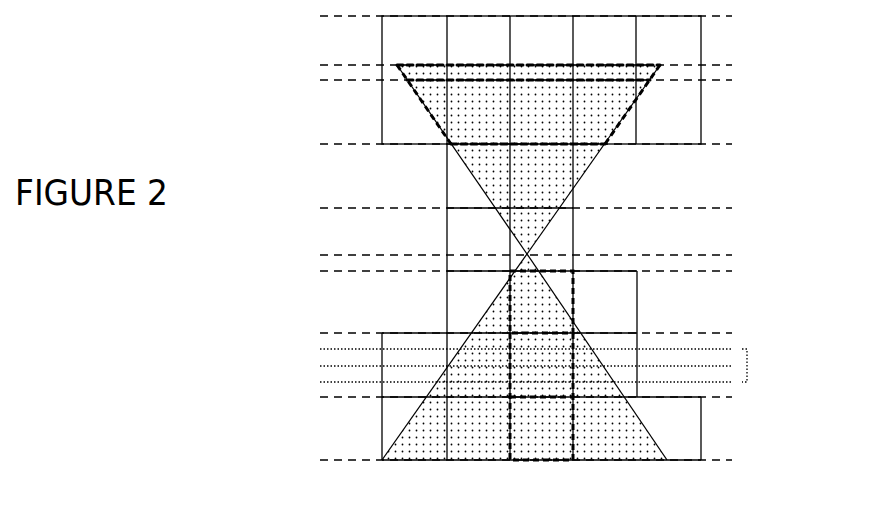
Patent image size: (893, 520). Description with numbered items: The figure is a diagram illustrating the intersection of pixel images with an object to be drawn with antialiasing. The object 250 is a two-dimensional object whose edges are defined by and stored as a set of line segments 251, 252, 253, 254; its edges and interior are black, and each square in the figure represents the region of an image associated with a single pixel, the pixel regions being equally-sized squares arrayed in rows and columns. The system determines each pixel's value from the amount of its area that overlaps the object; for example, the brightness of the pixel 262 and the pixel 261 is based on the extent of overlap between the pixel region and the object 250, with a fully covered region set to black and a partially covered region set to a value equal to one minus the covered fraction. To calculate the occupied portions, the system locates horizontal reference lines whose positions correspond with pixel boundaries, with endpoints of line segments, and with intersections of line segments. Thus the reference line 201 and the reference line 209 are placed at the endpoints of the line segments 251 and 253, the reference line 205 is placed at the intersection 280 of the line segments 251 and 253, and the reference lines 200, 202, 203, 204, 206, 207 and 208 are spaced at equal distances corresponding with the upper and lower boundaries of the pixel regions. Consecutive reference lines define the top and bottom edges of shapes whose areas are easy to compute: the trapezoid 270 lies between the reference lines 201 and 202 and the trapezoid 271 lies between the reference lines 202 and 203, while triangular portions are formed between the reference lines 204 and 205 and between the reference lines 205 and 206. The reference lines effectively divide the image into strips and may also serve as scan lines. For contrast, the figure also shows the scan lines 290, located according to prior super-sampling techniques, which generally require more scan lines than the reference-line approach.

The horizontal reference line 200 is at (328, 16).
The horizontal reference line 201 is at (328, 65).
The horizontal reference line 202 is at (328, 80).
The horizontal reference line 203 is at (328, 144).
The horizontal reference line 204 is at (328, 208).
The horizontal reference line 205 is at (328, 255).
The horizontal reference line 206 is at (328, 271).
The horizontal reference line 207 is at (328, 333).
The horizontal reference line 208 is at (328, 397).
The horizontal reference line 209 is at (328, 460).
The object 250 is at (543, 222).
The line segment 251 is at (502, 218).
The line segment 252 is at (620, 65).
The line segment 253 is at (571, 190).
The line segment 254 is at (473, 460).
The pixel 261 is at (577, 302).
The pixel 262 is at (577, 427).
The trapezoid 270 is at (663, 76).
The trapezoid 271 is at (623, 133).
The intersection 280 is at (545, 252).
The scan lines 290 is at (749, 364).